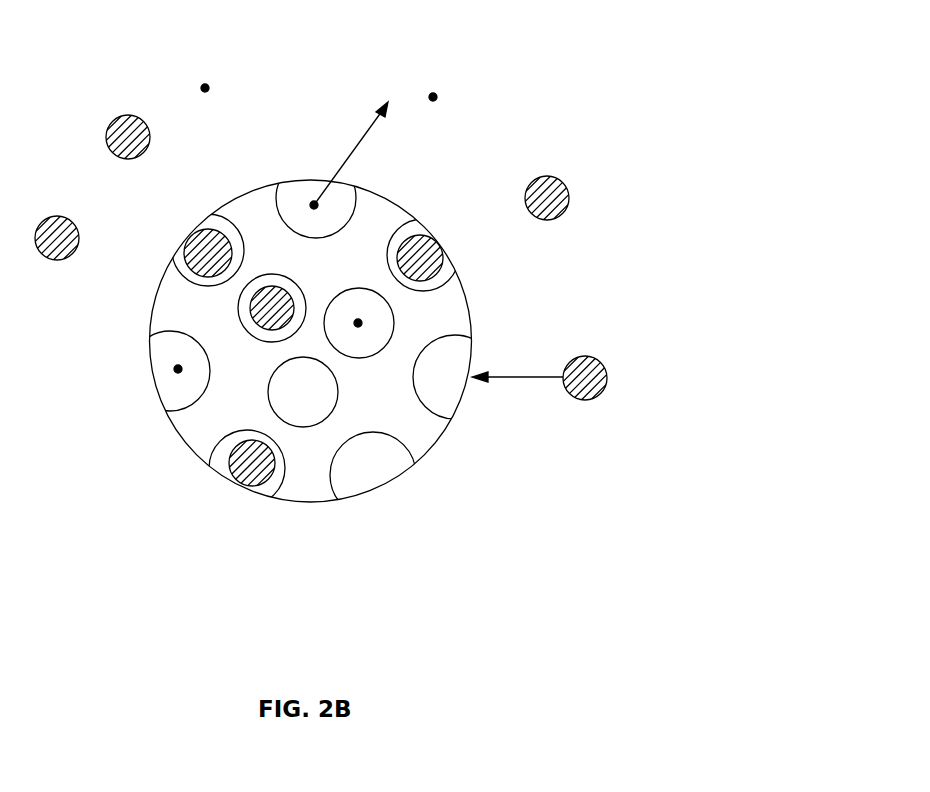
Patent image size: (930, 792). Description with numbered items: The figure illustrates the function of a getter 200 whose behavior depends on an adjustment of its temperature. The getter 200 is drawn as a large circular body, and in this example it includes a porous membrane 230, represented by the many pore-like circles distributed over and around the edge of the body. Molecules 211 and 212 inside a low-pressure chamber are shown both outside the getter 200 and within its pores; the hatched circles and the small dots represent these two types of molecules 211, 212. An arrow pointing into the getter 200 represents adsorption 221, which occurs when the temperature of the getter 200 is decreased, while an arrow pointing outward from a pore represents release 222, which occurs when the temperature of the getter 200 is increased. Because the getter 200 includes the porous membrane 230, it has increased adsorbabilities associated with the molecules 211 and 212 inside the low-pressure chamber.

The getter 200 is at (470, 303).
The molecule 211 is at (128, 114).
The molecule 212 is at (205, 84).
The adsorption 221 is at (522, 380).
The release 222 is at (358, 143).
The porous membrane 230 is at (330, 478).